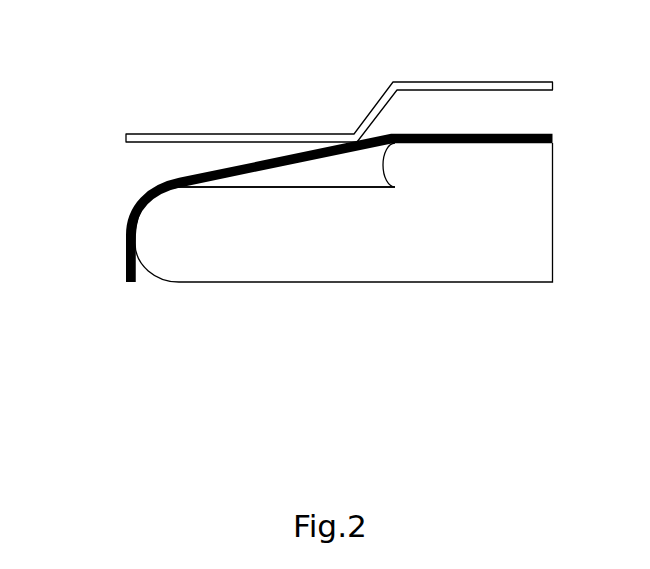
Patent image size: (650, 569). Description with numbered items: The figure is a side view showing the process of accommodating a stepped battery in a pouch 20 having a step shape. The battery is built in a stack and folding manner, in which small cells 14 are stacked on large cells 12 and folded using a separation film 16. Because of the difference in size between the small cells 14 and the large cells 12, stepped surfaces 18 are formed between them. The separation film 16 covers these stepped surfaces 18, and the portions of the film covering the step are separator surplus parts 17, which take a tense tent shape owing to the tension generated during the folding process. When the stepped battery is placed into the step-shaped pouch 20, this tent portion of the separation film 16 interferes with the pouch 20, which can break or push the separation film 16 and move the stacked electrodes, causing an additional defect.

The large cell 12 is at (545, 243).
The small cell 14 is at (545, 162).
The separation film 16 is at (123, 263).
The separator surplus part 17 is at (267, 157).
The stepped surface 18 is at (287, 187).
The pouch 20 is at (398, 82).